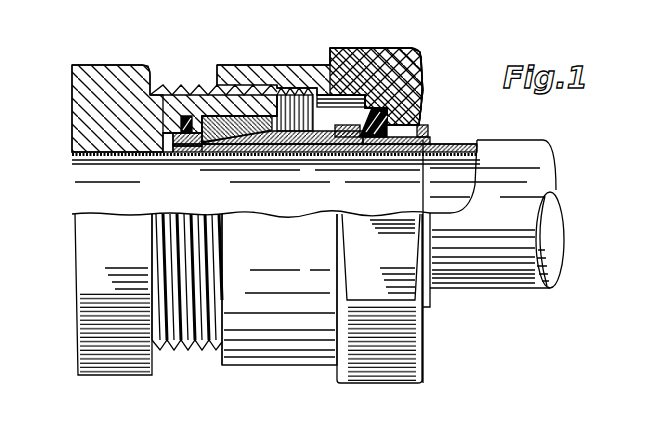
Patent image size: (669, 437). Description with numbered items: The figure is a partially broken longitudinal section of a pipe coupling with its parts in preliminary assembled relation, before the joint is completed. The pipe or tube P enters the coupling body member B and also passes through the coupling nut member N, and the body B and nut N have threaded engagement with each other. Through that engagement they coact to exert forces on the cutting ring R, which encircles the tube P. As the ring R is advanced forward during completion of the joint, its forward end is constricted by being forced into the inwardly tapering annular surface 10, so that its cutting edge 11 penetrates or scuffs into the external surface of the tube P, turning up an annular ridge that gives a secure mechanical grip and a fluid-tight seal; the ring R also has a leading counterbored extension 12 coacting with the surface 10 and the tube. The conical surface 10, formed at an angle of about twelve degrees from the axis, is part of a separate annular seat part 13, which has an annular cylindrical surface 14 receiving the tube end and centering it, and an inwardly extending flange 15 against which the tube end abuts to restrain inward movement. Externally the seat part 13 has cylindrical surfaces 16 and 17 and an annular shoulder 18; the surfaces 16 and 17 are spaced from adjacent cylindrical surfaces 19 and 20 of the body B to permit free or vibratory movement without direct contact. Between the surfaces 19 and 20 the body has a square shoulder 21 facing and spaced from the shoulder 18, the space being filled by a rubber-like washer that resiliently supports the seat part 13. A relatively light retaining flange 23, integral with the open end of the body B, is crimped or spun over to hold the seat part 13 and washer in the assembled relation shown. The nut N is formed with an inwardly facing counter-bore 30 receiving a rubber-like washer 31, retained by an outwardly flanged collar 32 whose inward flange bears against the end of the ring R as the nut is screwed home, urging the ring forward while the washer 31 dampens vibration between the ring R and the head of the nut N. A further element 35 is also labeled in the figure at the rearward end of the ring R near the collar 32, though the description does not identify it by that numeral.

The coupling body member B is at (75, 100).
The coupling nut member N is at (416, 57).
The pipe or tube P is at (523, 197).
The cutting ring R is at (325, 93).
The inwardly tapering annular surface 10 is at (207, 112).
The cutting edge 11 is at (266, 150).
The leading counterbored extension 12 is at (250, 141).
The annular seat part 13 is at (186, 128).
The annular cylindrical surface 14 is at (195, 147).
The inwardly extending flange 15 is at (173, 152).
The cylindrical surface 16 is at (178, 130).
The cylindrical surface 17 is at (200, 118).
The annular shoulder 18 is at (180, 123).
The cylindrical surface 19 is at (185, 138).
The cylindrical surface 20 is at (238, 115).
The square shoulder 21 is at (168, 125).
The retaining flange 23 is at (267, 140).
The counter-bore 30 is at (418, 87).
The washer 31 is at (375, 112).
The outwardly flanged collar 32 is at (427, 127).
The spring washer 35 is at (349, 106).